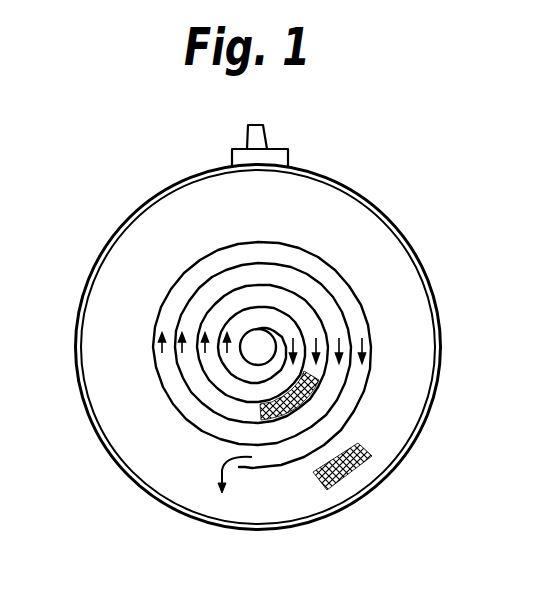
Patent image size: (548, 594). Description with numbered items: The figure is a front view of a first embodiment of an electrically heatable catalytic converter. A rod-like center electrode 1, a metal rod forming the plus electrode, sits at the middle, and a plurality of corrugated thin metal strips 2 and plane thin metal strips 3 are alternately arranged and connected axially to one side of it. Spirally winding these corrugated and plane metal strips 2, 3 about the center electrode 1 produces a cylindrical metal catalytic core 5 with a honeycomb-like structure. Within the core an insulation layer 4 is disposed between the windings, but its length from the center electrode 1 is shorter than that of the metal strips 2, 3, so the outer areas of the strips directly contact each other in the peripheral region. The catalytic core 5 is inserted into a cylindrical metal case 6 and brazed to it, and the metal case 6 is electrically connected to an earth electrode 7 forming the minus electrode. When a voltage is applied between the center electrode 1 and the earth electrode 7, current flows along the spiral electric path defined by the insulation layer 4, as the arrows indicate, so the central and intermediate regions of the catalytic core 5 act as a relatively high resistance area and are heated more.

The center electrode 1 is at (258, 347).
The corrugated thin metal strips 2 is at (375, 449).
The plane thin metal strips 3 is at (332, 486).
The insulation layer 4 is at (150, 383).
The metal catalytic core 5 is at (110, 330).
The metal case 6 is at (147, 497).
The earth electrode 7 is at (268, 135).